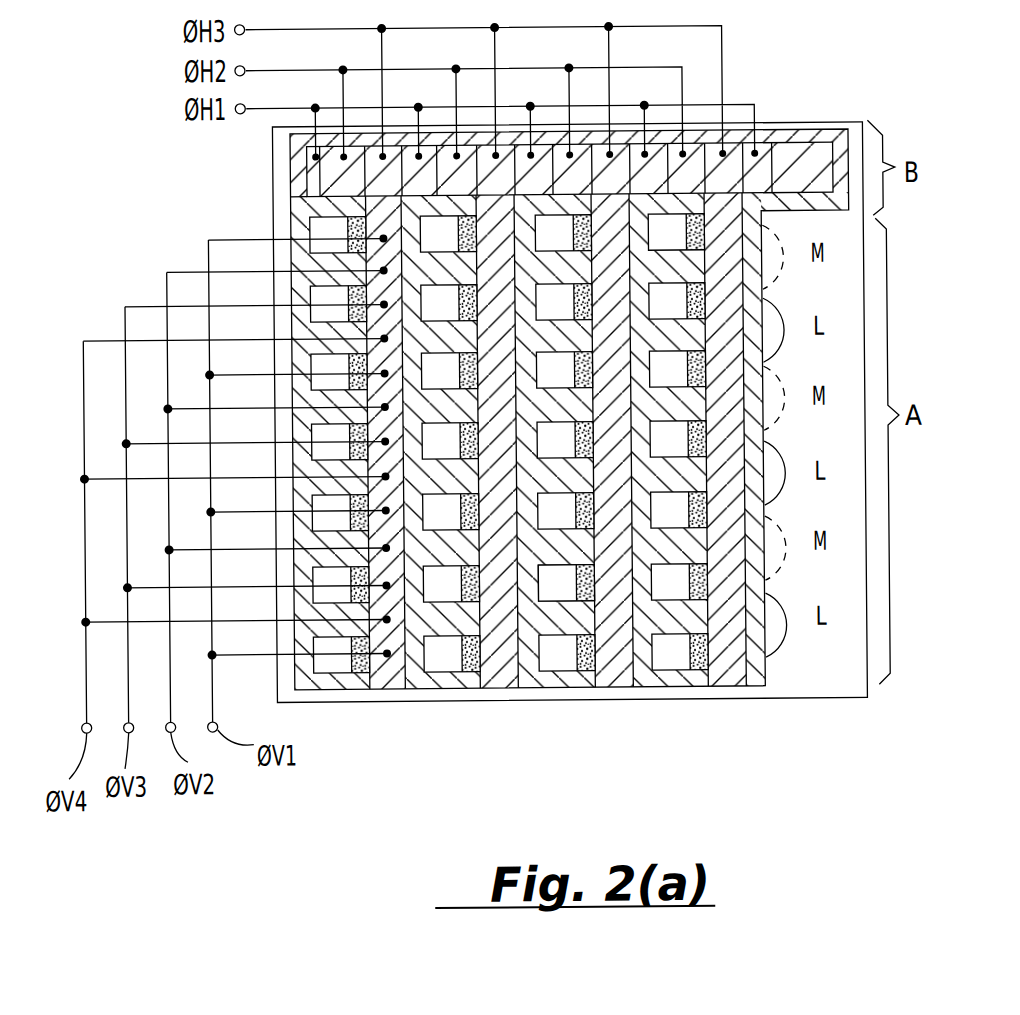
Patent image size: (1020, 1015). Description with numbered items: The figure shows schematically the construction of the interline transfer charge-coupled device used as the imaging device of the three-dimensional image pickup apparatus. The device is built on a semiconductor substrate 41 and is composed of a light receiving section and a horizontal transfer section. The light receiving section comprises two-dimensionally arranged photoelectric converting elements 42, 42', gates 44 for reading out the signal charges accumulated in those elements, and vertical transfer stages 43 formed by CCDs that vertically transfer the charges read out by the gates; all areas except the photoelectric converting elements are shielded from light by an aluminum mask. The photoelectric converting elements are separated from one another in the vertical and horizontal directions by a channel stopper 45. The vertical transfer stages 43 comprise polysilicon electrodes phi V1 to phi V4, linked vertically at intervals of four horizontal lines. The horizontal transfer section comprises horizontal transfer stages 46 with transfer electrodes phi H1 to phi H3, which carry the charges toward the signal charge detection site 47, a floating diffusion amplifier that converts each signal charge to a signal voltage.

The semiconductor substrate 41 is at (848, 688).
The photoelectric converting element 42 is at (509, 492).
The photoelectric converting element 42' is at (540, 661).
The vertical transfer stage 43 is at (733, 654).
The gate 44 is at (704, 664).
The channel stopper 45 is at (651, 624).
The horizontal transfer stage 46 is at (379, 176).
The signal charge detection site 47 is at (806, 159).